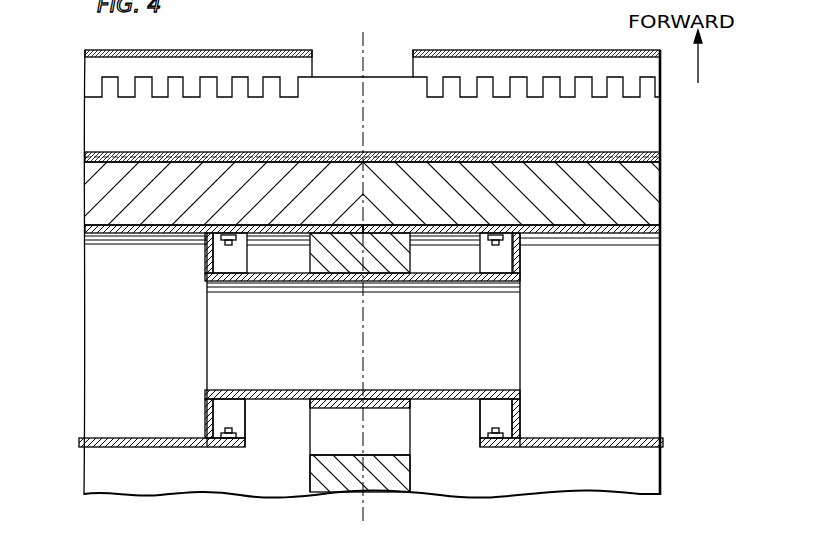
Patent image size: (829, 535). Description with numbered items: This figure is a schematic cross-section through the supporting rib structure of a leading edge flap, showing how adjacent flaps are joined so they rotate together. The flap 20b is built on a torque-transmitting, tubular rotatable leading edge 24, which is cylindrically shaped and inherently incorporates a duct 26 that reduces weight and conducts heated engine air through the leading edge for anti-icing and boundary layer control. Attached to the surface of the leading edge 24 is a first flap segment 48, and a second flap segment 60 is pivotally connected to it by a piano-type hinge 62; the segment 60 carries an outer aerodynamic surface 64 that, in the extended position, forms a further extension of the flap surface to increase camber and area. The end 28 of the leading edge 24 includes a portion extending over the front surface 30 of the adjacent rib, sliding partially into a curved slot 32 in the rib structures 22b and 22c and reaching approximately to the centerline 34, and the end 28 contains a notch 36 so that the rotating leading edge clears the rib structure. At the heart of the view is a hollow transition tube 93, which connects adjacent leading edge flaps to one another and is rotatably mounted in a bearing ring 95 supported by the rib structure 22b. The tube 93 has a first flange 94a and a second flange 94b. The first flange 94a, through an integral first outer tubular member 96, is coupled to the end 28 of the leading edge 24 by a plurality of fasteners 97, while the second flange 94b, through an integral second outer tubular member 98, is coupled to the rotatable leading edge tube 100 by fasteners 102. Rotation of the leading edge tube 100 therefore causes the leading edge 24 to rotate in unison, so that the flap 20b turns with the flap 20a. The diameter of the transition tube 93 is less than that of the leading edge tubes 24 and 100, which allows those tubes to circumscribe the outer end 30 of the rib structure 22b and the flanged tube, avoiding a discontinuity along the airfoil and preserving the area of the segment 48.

The outer aerodynamic surface 64 is at (110, 50).
The second flap segment 60 is at (88, 67).
The piano-type hinge 62 is at (100, 87).
The first flap segment 48 is at (86, 135).
The centerline 34 is at (365, 40).
The front surface 30 is at (380, 228).
The first outer tubular member 96 is at (430, 228).
The fasteners 97 is at (500, 232).
The leading edge flap 20b is at (88, 207).
The leading edge flap 20a is at (660, 219).
The rotatable leading edge 24 is at (83, 340).
The second flange 94b is at (208, 262).
The first flange 94a is at (520, 262).
The duct 26 is at (159, 362).
The transition tube 93 is at (313, 341).
The bearing ring 95 is at (388, 276).
The notch 36 is at (273, 416).
The curved slot 32 is at (336, 422).
The rotatable leading edge tube 100 is at (100, 442).
The fasteners 102 is at (227, 448).
The second outer tubular member 98 is at (240, 450).
The rib structure 22b is at (385, 478).
The end 28 is at (518, 452).
The rib structure 22c is at (362, 38).